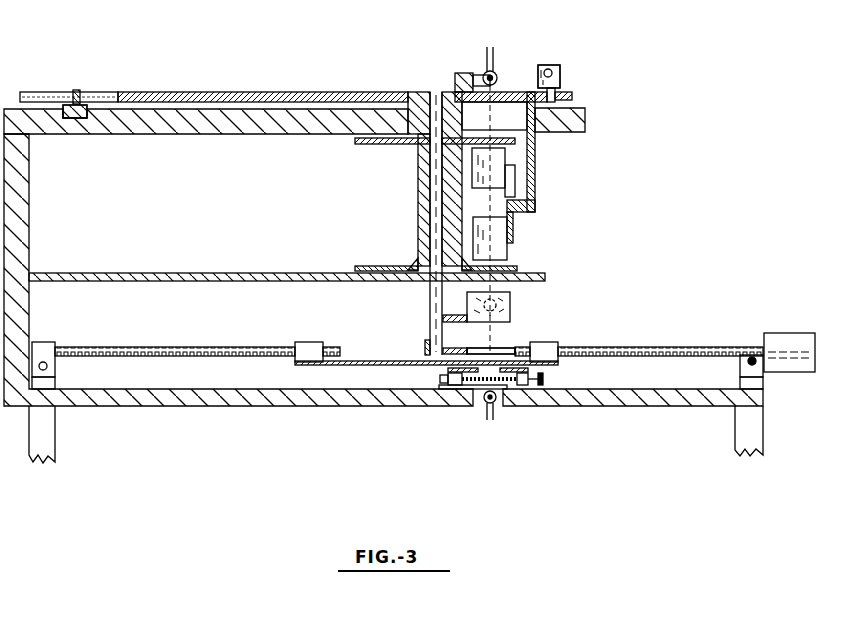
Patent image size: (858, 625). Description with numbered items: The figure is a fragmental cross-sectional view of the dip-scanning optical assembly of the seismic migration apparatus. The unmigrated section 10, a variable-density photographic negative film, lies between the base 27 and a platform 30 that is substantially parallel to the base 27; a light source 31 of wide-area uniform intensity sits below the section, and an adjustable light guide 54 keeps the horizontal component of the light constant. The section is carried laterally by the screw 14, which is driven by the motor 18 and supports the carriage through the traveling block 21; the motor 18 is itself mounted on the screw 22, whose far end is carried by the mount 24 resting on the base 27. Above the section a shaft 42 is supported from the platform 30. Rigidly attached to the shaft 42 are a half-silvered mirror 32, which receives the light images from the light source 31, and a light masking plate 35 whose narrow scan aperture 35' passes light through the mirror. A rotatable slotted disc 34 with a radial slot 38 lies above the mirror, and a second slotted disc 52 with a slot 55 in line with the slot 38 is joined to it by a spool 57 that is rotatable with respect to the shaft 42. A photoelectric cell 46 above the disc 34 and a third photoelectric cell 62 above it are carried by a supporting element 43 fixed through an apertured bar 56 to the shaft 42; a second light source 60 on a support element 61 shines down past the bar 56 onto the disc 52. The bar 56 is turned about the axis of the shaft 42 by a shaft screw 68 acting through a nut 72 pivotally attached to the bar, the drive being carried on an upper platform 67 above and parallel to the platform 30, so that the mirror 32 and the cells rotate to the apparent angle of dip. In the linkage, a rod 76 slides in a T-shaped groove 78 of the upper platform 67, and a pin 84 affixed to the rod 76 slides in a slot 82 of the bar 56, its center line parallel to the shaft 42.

The unmigrated section 10 is at (393, 362).
The screw 14 is at (144, 347).
The motor 18 is at (777, 333).
The traveling block 21 is at (558, 343).
The screw 22 is at (756, 363).
The mount 24 is at (763, 383).
The base 27 is at (257, 406).
The platform 30 is at (282, 274).
The light source 31 is at (496, 403).
The half-silvered mirror 32 is at (510, 305).
The rotatable slotted disc 34 is at (386, 265).
The light masking plate 35 is at (454, 338).
The scan aperture 35' is at (513, 337).
The radial slot 38 is at (517, 268).
The shaft 42 is at (430, 290).
The supporting element 43 is at (535, 192).
The photoelectric cell 46 is at (507, 246).
The second slotted disc 52 is at (386, 145).
The light guide 54 is at (545, 379).
The slot 55 is at (515, 144).
The apertured bar 56 is at (230, 93).
The spool 57 is at (418, 195).
The second light source 60 is at (495, 73).
The support element 61 is at (458, 73).
The third photoelectric cell 62 is at (505, 165).
The upper platform 67 is at (272, 134).
The shaft screw 68 is at (556, 72).
The nut 72 is at (548, 65).
The rod 76 is at (80, 104).
The T-shaped groove 78 is at (84, 119).
The slot 82 is at (112, 97).
The pin 84 is at (74, 92).